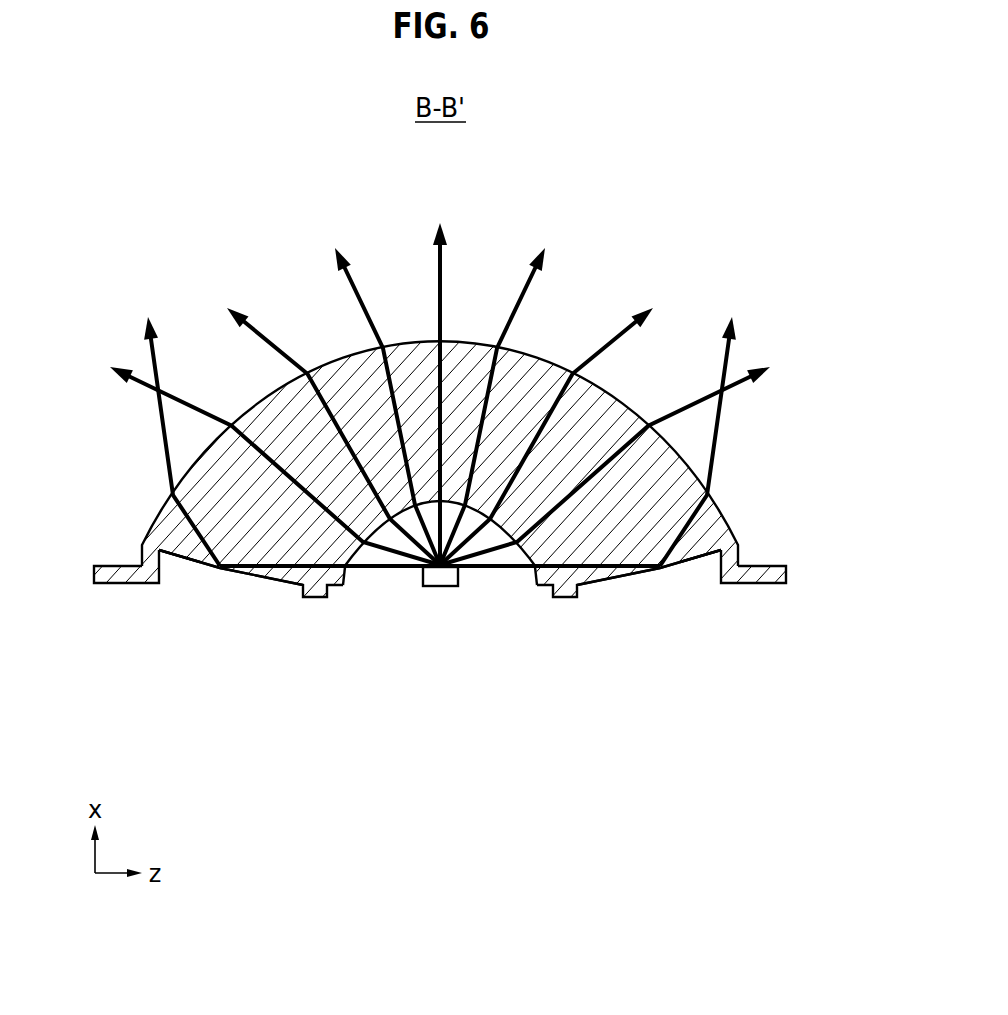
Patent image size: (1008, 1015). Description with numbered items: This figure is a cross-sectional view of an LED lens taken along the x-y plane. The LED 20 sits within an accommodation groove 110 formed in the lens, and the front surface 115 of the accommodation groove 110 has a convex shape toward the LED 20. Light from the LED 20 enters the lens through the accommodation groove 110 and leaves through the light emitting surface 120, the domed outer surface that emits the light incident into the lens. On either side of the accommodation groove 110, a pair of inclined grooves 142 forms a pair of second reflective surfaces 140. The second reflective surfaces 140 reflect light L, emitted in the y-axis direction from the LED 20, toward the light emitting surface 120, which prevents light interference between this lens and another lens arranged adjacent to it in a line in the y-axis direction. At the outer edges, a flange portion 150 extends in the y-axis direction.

The light emitting surface 120 is at (549, 362).
The flange portion 150 is at (768, 573).
The accommodation groove 110 is at (405, 545).
The front surface of the accommodation groove 115 is at (487, 550).
The LED 20 is at (440, 575).
The second reflective surfaces 140 is at (625, 577).
The inclined grooves 142 is at (690, 569).
The light L is at (440, 394).